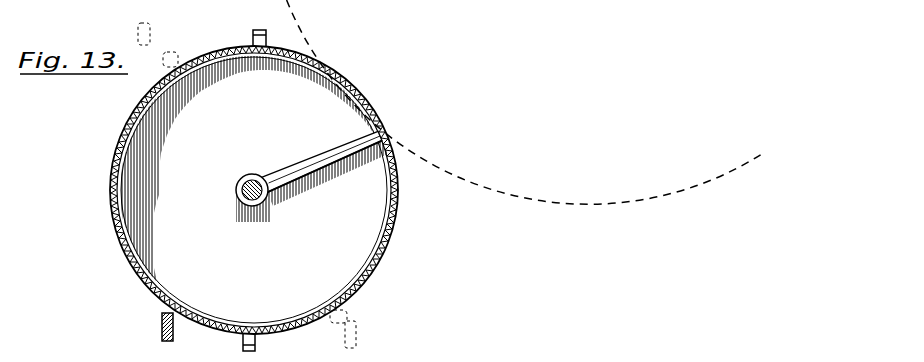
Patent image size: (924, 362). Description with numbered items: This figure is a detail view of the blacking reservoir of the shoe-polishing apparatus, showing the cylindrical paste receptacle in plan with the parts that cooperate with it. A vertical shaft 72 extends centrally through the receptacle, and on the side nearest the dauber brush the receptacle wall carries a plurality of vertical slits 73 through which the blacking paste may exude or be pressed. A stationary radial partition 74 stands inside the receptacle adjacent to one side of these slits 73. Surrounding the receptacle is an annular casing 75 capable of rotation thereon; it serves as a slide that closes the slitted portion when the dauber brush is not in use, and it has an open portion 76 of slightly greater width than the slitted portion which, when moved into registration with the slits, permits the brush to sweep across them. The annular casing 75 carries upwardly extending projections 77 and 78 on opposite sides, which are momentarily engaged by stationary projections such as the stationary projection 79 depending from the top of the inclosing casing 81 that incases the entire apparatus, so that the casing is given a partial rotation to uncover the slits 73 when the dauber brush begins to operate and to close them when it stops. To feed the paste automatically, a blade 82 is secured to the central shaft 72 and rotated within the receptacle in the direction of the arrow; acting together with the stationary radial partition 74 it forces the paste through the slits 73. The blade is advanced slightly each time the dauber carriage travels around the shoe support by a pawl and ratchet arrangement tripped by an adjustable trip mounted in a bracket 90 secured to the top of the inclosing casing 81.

The vertical shaft 72 is at (237, 190).
The vertical slits 73 is at (358, 118).
The stationary radial partition 74 is at (309, 166).
The annular casing 75 is at (383, 250).
The open portion 76 is at (353, 89).
The upwardly extending projection 77 is at (258, 346).
The upwardly extending projection 78 is at (254, 40).
The stationary projection 79 is at (163, 329).
The blade 82 is at (304, 179).
The bracket 90 is at (23, 350).
The inclosing casing 81 is at (77, 350).